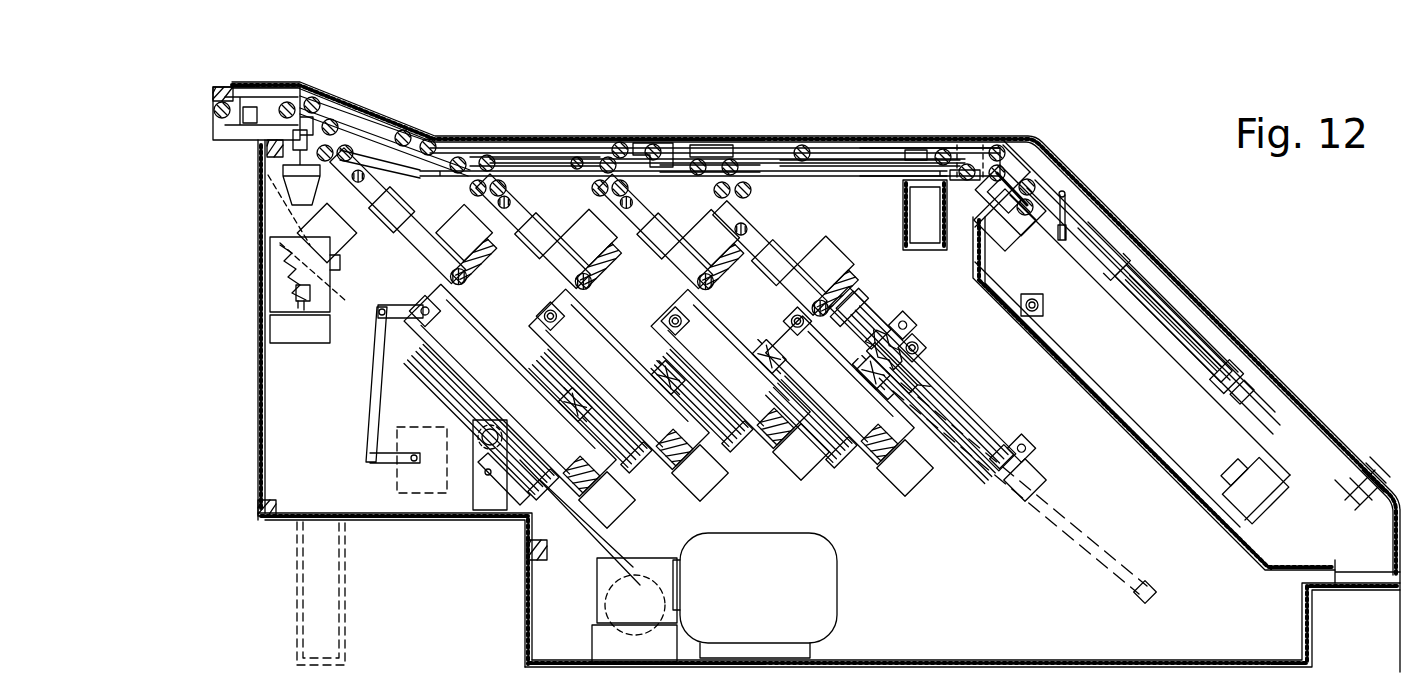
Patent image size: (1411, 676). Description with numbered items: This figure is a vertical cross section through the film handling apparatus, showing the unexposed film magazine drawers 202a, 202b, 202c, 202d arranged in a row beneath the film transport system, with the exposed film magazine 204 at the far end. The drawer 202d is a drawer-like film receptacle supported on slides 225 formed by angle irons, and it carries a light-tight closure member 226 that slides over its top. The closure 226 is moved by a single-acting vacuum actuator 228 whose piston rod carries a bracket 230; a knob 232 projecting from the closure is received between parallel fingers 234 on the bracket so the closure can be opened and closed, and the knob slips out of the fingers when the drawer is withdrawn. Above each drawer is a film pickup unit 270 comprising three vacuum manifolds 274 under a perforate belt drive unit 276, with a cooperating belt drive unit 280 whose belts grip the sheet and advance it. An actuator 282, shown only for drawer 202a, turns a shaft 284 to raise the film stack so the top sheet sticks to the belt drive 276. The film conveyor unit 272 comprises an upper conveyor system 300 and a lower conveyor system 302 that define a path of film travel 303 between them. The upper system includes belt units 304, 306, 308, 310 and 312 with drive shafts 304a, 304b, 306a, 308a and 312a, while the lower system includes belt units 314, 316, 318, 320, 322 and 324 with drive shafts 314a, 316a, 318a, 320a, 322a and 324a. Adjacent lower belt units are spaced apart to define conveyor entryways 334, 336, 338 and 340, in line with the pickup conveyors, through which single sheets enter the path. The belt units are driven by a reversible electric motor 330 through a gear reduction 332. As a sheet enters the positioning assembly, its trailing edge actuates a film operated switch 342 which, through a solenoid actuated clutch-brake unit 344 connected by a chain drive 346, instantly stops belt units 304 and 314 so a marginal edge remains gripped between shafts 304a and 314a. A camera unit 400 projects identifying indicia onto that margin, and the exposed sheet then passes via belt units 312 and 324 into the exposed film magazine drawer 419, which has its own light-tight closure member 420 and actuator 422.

The magazine drawer 202a is at (506, 388).
The magazine drawer 202b is at (606, 378).
The magazine drawer 202c is at (718, 373).
The drawer-like film receptacle 202d is at (836, 497).
The exposed film magazine 204 is at (1190, 312).
The slides 225 is at (702, 272).
The closure member 226 is at (858, 312).
The actuator 228 is at (945, 410).
The bracket 230 is at (905, 364).
The knob 232 is at (892, 348).
The fingers 234 is at (885, 372).
The film pickup unit 270 is at (383, 258).
The film conveyor unit 272 is at (792, 102).
The vacuum manifold 274 is at (800, 240).
The belt drive unit 276 is at (795, 222).
The cooperating belt drive unit 280 is at (745, 248).
The actuator 282 is at (395, 483).
The shaft 284 is at (432, 322).
The upper conveyor system 300 is at (800, 138).
The lower conveyor system 302 is at (776, 180).
The path of film travel 303 is at (655, 147).
The belt unit 304 is at (348, 100).
The drive shaft 304a is at (240, 93).
The drive shaft 304b is at (300, 113).
The belt unit 306 is at (487, 153).
The drive shaft 306a is at (610, 158).
The belt unit 308 is at (690, 150).
The drive shaft 308a is at (820, 140).
The belt unit 310 is at (890, 142).
The belt unit 312 is at (1025, 165).
The drive shaft 312a is at (998, 150).
The belt unit 314 is at (243, 118).
The drive shaft 314a is at (213, 118).
The belt unit 316 is at (383, 152).
The drive shaft 316a is at (428, 150).
The belt unit 318 is at (525, 172).
The drive shaft 318a is at (490, 158).
The belt unit 320 is at (648, 173).
The drive shaft 320a is at (605, 157).
The belt unit 322 is at (847, 173).
The drive shaft 322a is at (733, 147).
The belt unit 324 is at (995, 185).
The drive shaft 324a is at (1040, 170).
The reversible electric motor 330 is at (766, 600).
The gear reduction 332 is at (640, 560).
The conveyor entryway 334 is at (297, 143).
The conveyor entryway 336 is at (478, 168).
The conveyor entryway 338 is at (548, 198).
The conveyor entryway 340 is at (655, 205).
The film operated switch 342 is at (277, 100).
The solenoid actuated clutch-brake unit 344 is at (272, 292).
The chain drive 346 is at (368, 352).
The camera unit 400 is at (935, 192).
The exposed film magazine drawer 419 is at (1117, 303).
The drawer closure member 420 is at (1335, 478).
The actuator 422 is at (1200, 350).